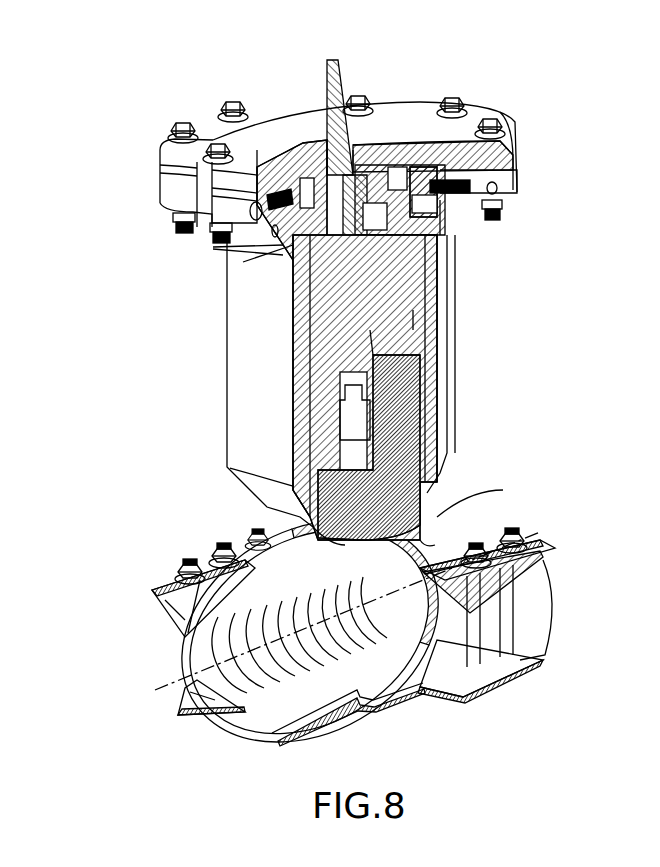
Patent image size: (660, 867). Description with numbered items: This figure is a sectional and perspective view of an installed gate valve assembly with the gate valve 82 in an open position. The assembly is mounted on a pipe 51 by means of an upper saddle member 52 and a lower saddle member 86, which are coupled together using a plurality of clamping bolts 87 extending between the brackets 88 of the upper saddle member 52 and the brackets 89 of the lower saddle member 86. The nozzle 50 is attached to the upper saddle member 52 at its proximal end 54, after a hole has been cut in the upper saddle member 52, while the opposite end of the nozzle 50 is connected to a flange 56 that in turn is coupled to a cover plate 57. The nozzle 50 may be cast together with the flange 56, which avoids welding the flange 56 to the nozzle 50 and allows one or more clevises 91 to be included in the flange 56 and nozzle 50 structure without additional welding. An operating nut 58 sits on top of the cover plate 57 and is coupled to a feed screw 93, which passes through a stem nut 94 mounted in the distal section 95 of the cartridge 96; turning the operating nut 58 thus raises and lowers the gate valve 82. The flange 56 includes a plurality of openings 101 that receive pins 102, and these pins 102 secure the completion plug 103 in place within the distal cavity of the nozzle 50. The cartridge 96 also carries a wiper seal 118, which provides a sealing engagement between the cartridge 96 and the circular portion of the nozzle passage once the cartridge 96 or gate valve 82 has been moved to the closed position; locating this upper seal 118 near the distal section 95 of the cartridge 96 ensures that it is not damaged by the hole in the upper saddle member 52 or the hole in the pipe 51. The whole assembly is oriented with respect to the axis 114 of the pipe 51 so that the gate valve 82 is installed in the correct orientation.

The nozzle 50 is at (216, 298).
The pipe 51 is at (255, 722).
The upper saddle member 52 is at (468, 518).
The proximal end 54 is at (428, 528).
The flange 56 is at (173, 170).
The cover plate 57 is at (385, 118).
The operating nut 58 is at (347, 87).
The gate valve 82 is at (252, 352).
The lower saddle member 86 is at (433, 695).
The clamping bolts 87 is at (508, 613).
The brackets of the upper saddle member 88 is at (165, 590).
The brackets of the lower saddle member 89 is at (195, 718).
The clevis 91 is at (227, 247).
The feed screw 93 is at (375, 346).
The stem nut 94 is at (428, 225).
The distal section 95 is at (420, 250).
The cartridge 96 is at (300, 398).
The openings 101 is at (475, 183).
The pins 102 is at (484, 150).
The completion plug 103 is at (318, 150).
The axis of the pipe 114 is at (178, 680).
The wiper seal 118 is at (413, 315).